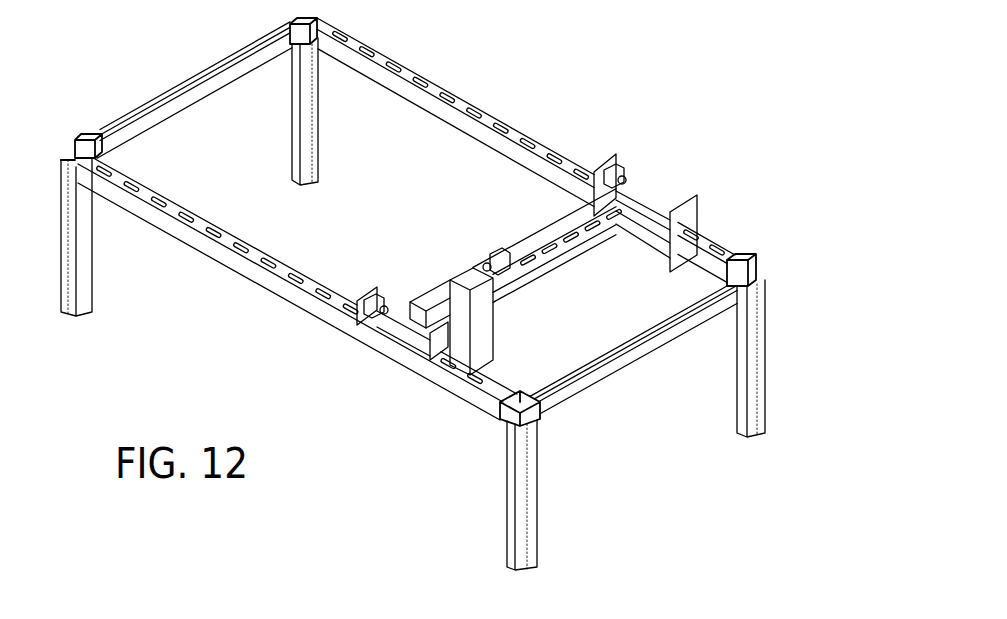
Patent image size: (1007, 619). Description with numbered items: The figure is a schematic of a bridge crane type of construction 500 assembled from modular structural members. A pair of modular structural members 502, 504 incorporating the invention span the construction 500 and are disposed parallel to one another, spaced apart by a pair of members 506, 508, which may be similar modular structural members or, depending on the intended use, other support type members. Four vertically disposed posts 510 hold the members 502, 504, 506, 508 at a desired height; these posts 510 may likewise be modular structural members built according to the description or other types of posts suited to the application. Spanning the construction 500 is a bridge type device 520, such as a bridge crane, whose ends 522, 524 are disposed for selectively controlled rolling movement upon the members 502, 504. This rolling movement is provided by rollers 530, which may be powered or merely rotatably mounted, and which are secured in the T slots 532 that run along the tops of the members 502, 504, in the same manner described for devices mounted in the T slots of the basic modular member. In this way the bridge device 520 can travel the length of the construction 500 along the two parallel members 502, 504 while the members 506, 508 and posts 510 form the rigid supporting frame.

The construction 500 is at (535, 95).
The modular structural member 502 is at (709, 244).
The modular structural member 504 is at (250, 274).
The member 506 is at (625, 366).
The member 508 is at (182, 82).
The post 510 is at (86, 292).
The bridge type device 520 is at (460, 248).
The end 522 is at (649, 199).
The end 524 is at (387, 340).
The roller 530 is at (479, 108).
The T slot 532 is at (353, 32).